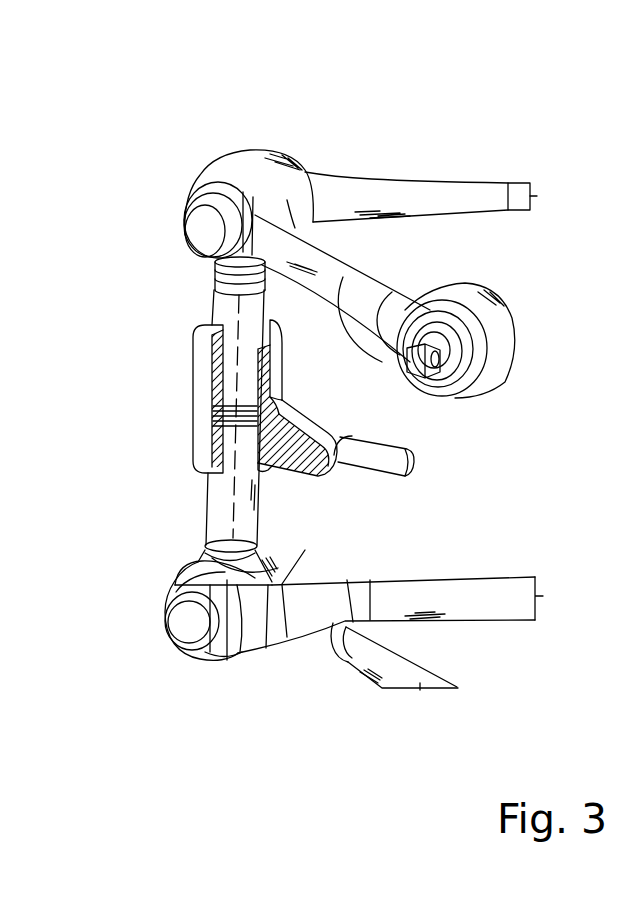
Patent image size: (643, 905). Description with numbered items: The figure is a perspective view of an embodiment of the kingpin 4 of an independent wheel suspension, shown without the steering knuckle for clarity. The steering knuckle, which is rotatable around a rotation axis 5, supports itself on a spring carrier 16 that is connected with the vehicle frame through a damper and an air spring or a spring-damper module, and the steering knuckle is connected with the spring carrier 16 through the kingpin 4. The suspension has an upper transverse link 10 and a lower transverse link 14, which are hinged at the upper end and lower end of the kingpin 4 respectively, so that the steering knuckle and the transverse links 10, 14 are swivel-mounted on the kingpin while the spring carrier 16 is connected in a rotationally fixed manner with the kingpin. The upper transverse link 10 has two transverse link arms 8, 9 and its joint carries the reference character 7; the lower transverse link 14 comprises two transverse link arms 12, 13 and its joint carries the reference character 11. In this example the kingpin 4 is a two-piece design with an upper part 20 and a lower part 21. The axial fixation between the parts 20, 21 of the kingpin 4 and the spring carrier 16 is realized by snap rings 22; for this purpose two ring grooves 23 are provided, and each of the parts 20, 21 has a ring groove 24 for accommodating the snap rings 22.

The kingpin 4 is at (190, 533).
The rotation axis 5 is at (231, 675).
The joint of the upper transverse link 7 is at (172, 181).
The transverse link arm 8 is at (438, 195).
The transverse link arm 9 is at (368, 283).
The upper transverse link 10 is at (360, 149).
The joint of the lower transverse link 11 is at (174, 683).
The transverse link arm 12 is at (463, 605).
The transverse link arm 13 is at (407, 668).
The lower transverse link 14 is at (385, 560).
The spring carrier 16 is at (345, 352).
The upper part 20 is at (327, 423).
The lower part 21 is at (220, 490).
The snap rings 22 is at (218, 410).
The ring grooves 23 is at (212, 440).
The ring groove 24 is at (212, 333).